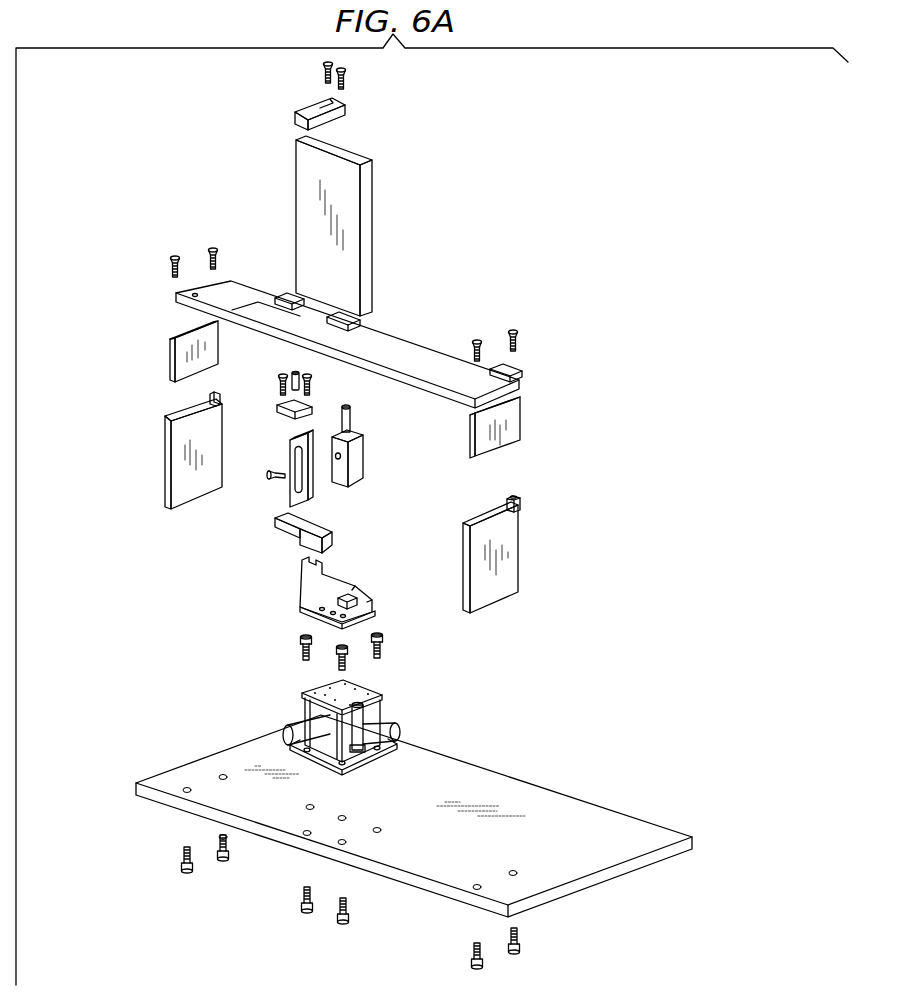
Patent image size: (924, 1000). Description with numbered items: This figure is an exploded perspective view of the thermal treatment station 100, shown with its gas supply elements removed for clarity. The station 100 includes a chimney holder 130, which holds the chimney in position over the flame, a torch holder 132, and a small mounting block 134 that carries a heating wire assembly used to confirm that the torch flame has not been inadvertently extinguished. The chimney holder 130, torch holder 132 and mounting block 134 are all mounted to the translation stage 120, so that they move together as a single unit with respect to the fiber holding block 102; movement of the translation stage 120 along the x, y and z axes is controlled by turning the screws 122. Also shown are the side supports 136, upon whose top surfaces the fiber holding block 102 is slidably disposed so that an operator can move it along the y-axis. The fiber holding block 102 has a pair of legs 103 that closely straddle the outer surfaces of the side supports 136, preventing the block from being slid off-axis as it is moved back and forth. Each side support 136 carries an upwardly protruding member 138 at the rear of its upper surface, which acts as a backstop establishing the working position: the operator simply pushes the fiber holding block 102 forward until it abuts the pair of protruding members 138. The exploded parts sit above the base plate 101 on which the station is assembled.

The thermal treatment station 100 is at (640, 250).
The base plate 101 is at (580, 798).
The fiber holding block 102 is at (538, 322).
The legs 103 is at (168, 353).
The translation stage 120 is at (387, 712).
The screws 122 is at (297, 722).
The chimney holder 130 is at (390, 62).
The torch holder 132 is at (301, 516).
The mounting block 134 is at (322, 527).
The side supports 136 is at (526, 547).
The upwardly protruding member 138 is at (522, 503).